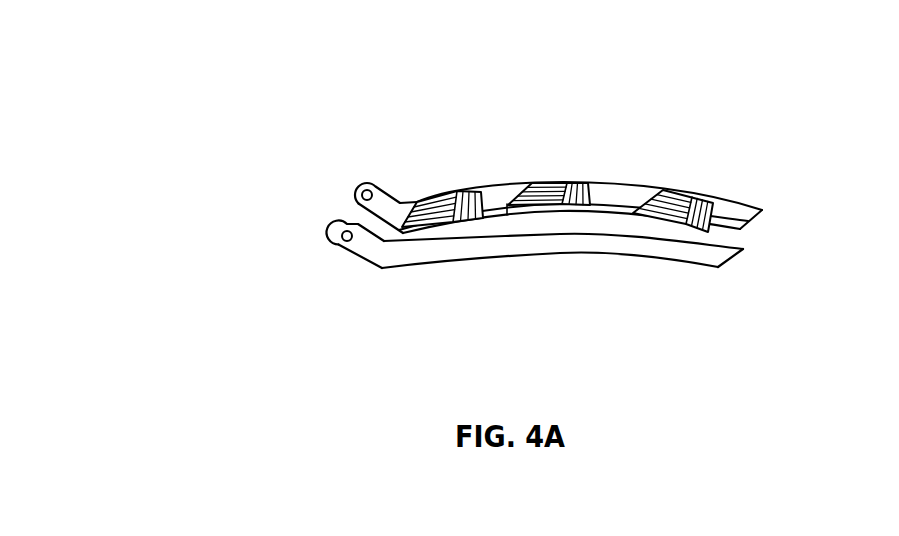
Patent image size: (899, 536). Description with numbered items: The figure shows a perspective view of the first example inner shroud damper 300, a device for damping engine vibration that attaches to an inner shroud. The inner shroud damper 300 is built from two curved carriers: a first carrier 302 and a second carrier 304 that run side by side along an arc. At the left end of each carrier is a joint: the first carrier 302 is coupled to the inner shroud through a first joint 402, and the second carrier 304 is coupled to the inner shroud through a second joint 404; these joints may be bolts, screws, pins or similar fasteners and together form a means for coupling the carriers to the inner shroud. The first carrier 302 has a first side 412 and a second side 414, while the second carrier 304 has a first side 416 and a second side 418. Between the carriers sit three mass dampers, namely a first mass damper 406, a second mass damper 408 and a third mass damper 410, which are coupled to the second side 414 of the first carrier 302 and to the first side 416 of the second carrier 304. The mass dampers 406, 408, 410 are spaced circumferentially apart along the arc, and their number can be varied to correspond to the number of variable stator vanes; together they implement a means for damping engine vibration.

The inner shroud damper 300 is at (214, 65).
The first carrier 302 is at (384, 175).
The second carrier 304 is at (383, 286).
The first joint 402 is at (366, 183).
The second joint 404 is at (336, 247).
The first mass damper 406 is at (458, 187).
The second mass damper 408 is at (568, 182).
The third mass damper 410 is at (686, 191).
The first side of the first carrier 412 is at (759, 211).
The second side of the first carrier 414 is at (740, 219).
The first side of the second carrier 416 is at (731, 261).
The second side of the second carrier 418 is at (691, 249).